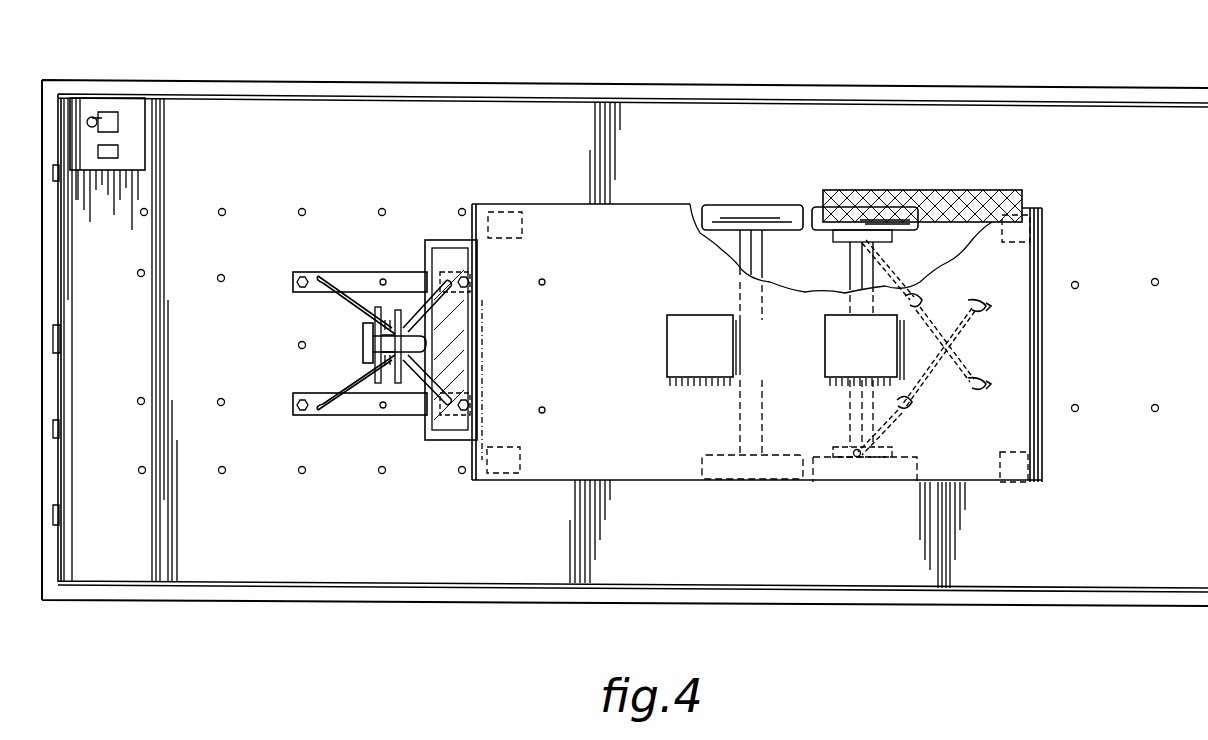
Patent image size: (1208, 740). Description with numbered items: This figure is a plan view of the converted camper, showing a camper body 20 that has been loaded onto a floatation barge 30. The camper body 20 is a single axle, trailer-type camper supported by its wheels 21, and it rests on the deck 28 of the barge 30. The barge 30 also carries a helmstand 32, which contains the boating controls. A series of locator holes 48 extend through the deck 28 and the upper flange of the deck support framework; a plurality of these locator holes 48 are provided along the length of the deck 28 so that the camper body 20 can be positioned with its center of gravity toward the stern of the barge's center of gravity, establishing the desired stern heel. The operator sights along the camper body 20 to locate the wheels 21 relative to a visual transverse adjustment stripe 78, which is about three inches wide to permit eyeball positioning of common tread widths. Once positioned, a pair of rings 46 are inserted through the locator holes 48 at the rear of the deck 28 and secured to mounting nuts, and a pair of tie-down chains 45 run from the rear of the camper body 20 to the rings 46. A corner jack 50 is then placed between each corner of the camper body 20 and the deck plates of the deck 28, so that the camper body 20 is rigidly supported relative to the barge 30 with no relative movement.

The camper body 20 is at (630, 205).
The wheels 21 is at (795, 207).
The deck 28 is at (316, 186).
The floatation barge 30 is at (278, 90).
The helmstand 32 is at (130, 108).
The tie-down chains 45 is at (910, 290).
The rings 46 is at (984, 302).
The locator holes 48 is at (145, 272).
The corner jack 50 is at (497, 208).
The visual transverse adjustment stripe 78 is at (920, 194).